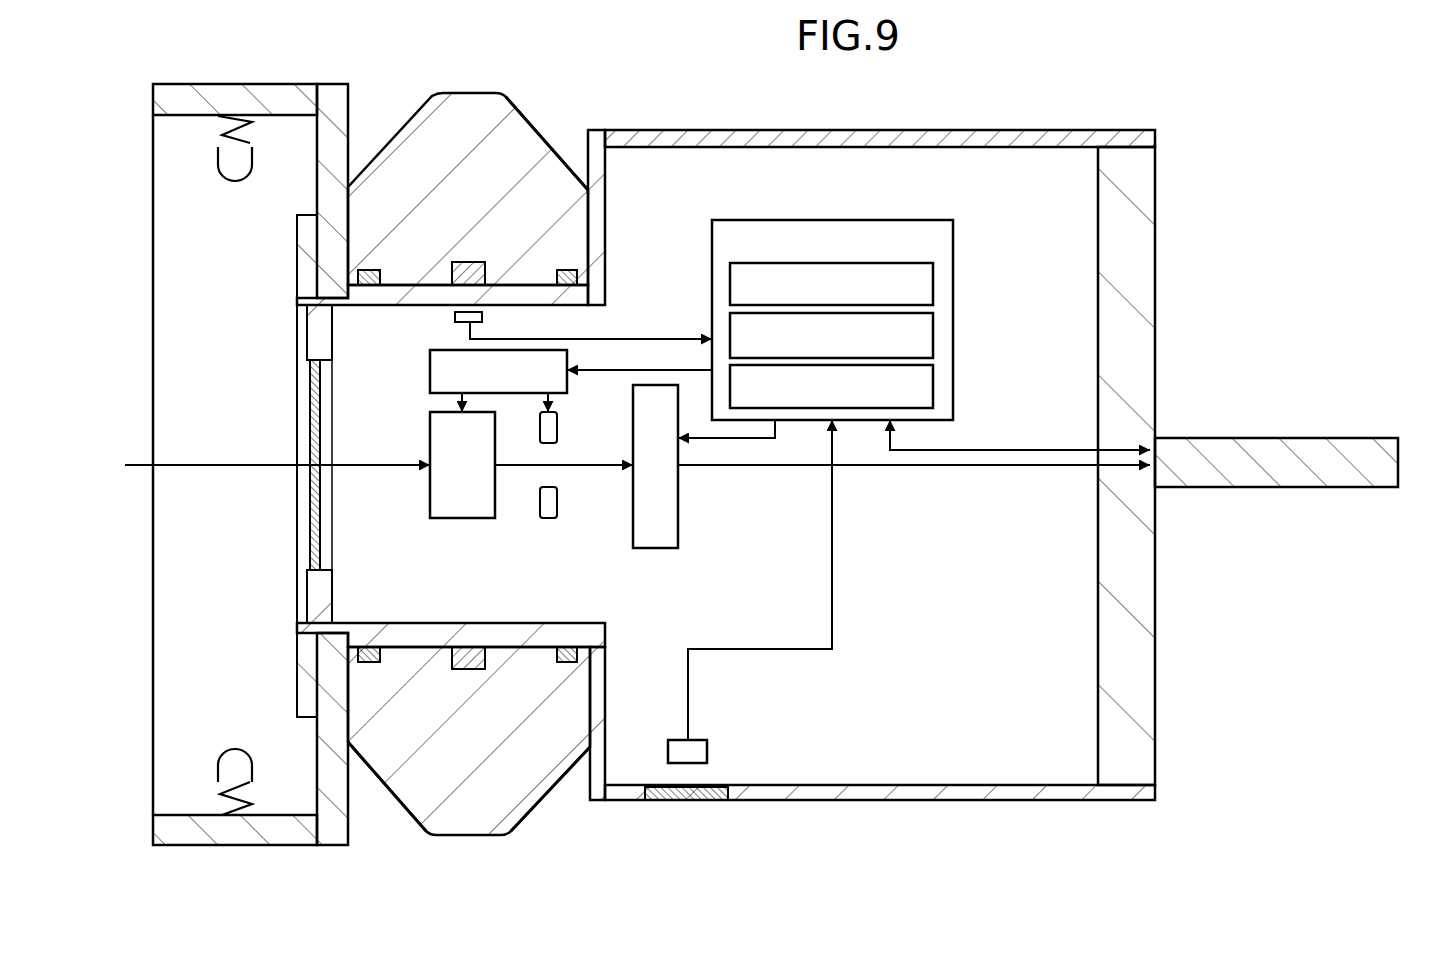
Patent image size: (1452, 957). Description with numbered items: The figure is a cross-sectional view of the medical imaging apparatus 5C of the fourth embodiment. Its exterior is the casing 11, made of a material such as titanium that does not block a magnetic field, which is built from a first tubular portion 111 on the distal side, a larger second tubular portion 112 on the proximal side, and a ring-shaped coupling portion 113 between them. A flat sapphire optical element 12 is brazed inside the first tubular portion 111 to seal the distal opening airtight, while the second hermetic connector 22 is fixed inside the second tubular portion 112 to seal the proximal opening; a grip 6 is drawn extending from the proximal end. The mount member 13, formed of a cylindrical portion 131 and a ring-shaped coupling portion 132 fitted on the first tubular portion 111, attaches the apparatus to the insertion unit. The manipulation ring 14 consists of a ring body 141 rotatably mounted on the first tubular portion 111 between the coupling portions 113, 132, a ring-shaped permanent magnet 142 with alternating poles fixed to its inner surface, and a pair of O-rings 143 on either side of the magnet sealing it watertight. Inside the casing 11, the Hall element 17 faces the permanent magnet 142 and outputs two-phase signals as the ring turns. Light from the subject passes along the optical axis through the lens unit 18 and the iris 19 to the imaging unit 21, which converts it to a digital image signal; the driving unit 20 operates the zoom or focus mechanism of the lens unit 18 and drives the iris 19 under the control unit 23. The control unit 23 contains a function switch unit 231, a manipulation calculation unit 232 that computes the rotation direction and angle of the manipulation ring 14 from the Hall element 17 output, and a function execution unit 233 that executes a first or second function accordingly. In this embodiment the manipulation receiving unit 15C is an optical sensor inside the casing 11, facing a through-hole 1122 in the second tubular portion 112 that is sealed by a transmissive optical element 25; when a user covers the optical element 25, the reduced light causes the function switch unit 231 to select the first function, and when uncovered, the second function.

The medical imaging apparatus 5C is at (1210, 80).
The mount member 13 is at (202, 37).
The cylindrical portion 131 is at (225, 106).
The coupling portion 132 is at (305, 128).
The casing 11 is at (463, 37).
The first tubular portion 111 is at (518, 280).
The coupling portion 113 is at (588, 190).
The second tubular portion 112 is at (615, 130).
The optical element 12 is at (307, 415).
The manipulation ring 14 is at (353, 876).
The ring body 141 is at (510, 805).
The permanent magnet 142 is at (468, 670).
The O-rings 143 is at (368, 663).
The second hermetic connector 22 is at (1135, 297).
The grip 6 is at (1325, 437).
The through-hole 1122 is at (707, 787).
The optical element 25 is at (688, 800).
The Hall element 17 is at (455, 317).
The driving unit 20 is at (430, 368).
The lens unit 18 is at (462, 518).
The iris 19 is at (548, 518).
The imaging unit 21 is at (655, 548).
The control unit 23 is at (891, 217).
The function switch unit 231 is at (933, 278).
The manipulation calculation unit 232 is at (933, 330).
The function execution unit 233 is at (933, 382).
The manipulation receiving unit 15C is at (710, 755).